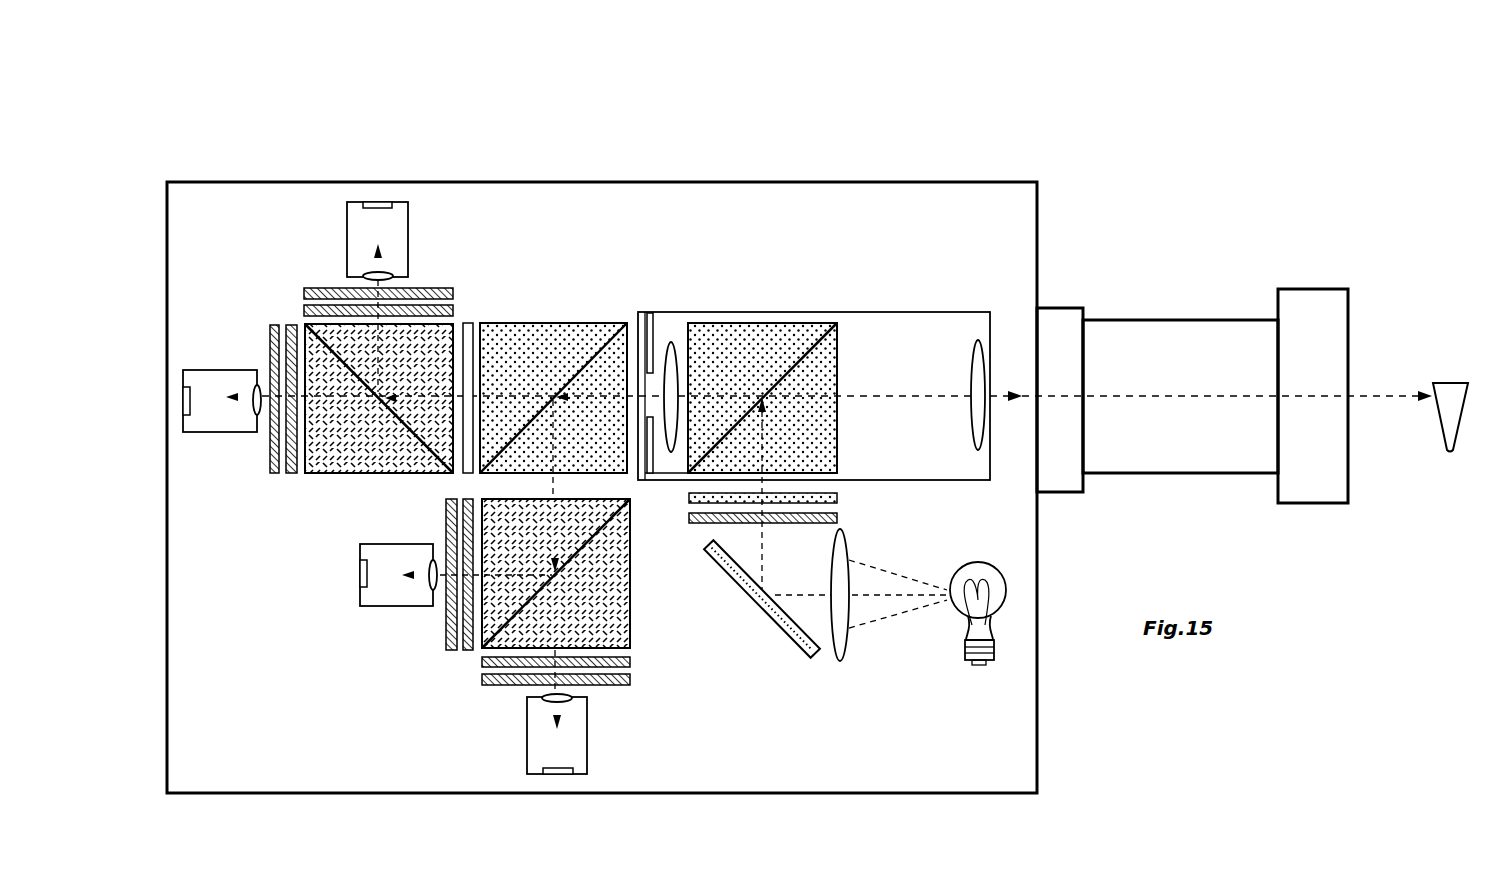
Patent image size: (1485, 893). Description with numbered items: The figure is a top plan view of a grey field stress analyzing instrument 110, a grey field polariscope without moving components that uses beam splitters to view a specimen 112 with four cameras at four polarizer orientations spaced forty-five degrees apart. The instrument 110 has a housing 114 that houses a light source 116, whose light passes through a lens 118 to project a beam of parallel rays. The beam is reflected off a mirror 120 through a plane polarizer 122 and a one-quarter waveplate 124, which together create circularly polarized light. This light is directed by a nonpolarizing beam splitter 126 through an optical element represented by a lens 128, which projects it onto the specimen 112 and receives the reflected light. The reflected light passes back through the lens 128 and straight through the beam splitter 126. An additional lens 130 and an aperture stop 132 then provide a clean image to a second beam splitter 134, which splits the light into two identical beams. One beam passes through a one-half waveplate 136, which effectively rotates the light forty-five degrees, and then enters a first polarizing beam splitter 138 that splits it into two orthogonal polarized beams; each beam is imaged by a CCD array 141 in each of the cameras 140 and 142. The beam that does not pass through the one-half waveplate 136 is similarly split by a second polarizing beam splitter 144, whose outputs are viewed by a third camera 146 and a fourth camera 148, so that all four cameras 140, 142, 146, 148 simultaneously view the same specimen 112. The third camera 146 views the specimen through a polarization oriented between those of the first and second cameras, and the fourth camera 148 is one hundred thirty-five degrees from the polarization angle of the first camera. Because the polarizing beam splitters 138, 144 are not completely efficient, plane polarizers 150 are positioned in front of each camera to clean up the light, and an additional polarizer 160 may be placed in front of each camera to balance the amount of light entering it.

The grey field stress analyzing instrument 110 is at (862, 150).
The specimen 112 is at (1448, 383).
The housing 114 is at (645, 178).
The light source 116 is at (990, 565).
The lens 118 is at (850, 640).
The mirror 120 is at (775, 620).
The plane polarizer 122 is at (689, 518).
The one-quarter waveplate 124 is at (840, 496).
The nonpolarizing beam splitter 126 is at (775, 322).
The lens 128 is at (970, 420).
The additional lens 130 is at (680, 340).
The aperture stop 132 is at (652, 345).
The second beam splitter 134 is at (568, 322).
The one-half waveplate 136 is at (467, 322).
The first polarizing beam splitter 138 is at (370, 473).
The camera 140 is at (347, 238).
The CCD array 141 is at (375, 208).
The camera 142 is at (215, 370).
The second polarizing beam splitter 144 is at (632, 592).
The third camera 146 is at (587, 730).
The fourth camera 148 is at (400, 544).
The plane polarizers 150 is at (304, 310).
The additional polarizer 160 is at (453, 293).